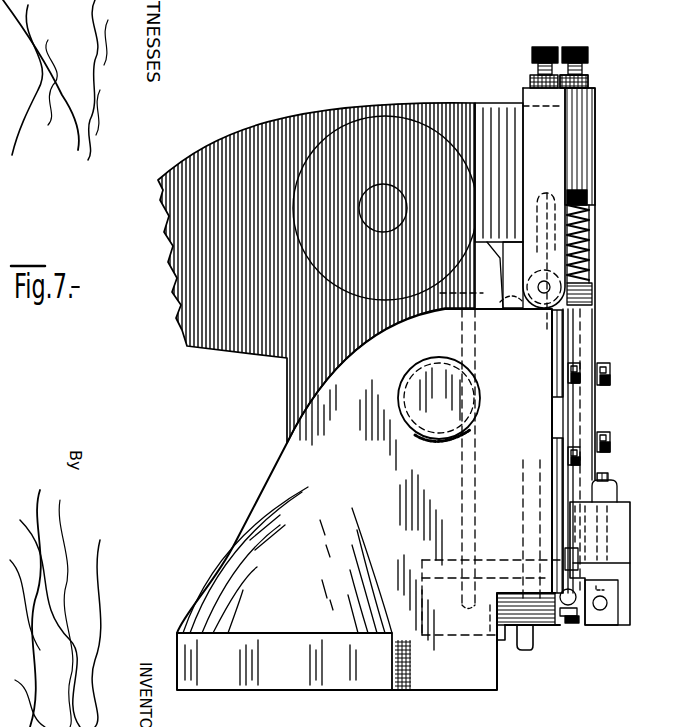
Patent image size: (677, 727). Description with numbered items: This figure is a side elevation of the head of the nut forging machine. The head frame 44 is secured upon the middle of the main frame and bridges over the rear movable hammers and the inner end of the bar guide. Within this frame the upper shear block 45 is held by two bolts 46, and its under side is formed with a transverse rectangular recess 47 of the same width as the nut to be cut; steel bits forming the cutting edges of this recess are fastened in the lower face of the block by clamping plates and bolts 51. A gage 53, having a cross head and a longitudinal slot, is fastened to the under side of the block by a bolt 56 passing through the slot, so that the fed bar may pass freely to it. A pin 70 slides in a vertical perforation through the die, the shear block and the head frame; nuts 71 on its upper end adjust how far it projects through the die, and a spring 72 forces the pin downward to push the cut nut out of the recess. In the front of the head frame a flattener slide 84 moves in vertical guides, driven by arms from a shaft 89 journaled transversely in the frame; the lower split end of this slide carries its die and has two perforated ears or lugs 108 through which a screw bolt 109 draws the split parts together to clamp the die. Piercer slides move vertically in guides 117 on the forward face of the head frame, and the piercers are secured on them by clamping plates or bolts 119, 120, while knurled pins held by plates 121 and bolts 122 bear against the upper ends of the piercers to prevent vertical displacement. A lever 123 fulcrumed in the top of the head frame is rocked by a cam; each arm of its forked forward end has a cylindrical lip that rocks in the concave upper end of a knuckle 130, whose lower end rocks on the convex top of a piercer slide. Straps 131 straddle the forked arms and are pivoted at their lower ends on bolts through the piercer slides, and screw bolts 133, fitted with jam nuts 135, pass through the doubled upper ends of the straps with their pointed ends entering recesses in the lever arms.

The head frame 44 is at (368, 499).
The upper shear block 45 is at (630, 590).
The bolts 46 is at (618, 498).
The transverse rectangular recess 47 is at (566, 624).
The bolts 51 is at (602, 603).
The gage 53 is at (534, 646).
The bolt 56 is at (507, 646).
The pin 70 is at (576, 626).
The nuts 71 is at (593, 298).
The spring 72 is at (590, 222).
The flattener slide 84 is at (528, 609).
The shaft 89 is at (439, 399).
The perforated ears or lugs 108 is at (566, 598).
The screw bolt 109 is at (606, 594).
The guides 117 is at (556, 416).
The clamping plates or bolts 119 is at (562, 494).
The clamping plates or bolts 120 is at (606, 445).
The plates 121 is at (574, 372).
The bolts 122 is at (610, 376).
The lever 123 is at (340, 273).
The knuckle 130 is at (592, 260).
The straps 131 is at (550, 170).
The screw bolts 133 is at (572, 50).
The jam nuts 135 is at (590, 78).